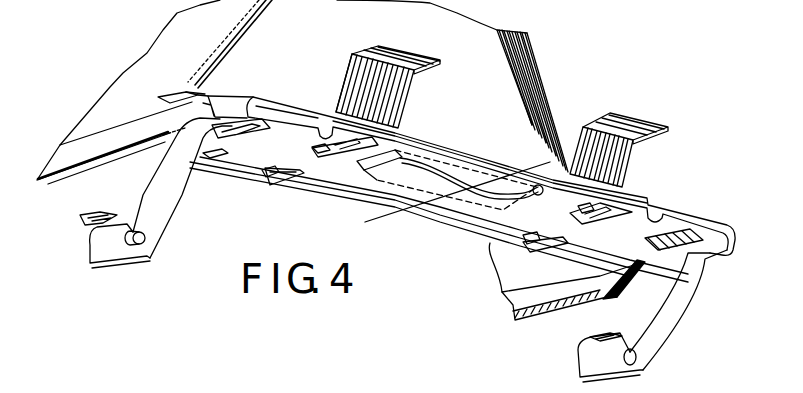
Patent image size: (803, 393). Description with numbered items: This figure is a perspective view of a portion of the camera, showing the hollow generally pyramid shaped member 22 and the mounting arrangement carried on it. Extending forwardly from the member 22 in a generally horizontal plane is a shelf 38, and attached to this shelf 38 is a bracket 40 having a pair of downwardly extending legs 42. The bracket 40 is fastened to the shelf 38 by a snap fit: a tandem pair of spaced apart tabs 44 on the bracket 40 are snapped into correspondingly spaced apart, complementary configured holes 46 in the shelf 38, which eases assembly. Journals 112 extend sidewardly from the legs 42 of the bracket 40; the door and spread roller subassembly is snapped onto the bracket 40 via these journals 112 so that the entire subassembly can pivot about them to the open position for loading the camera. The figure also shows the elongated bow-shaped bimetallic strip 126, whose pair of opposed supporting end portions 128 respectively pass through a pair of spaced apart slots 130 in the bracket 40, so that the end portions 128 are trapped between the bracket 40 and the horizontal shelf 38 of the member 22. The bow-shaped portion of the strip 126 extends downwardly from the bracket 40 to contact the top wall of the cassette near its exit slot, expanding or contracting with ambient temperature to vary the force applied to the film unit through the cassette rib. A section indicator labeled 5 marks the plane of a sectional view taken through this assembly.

The hollow generally pyramid shaped member 22 is at (541, 58).
The shelf 38 is at (268, 106).
The bracket 40 is at (415, 136).
The tabs 44 is at (350, 147).
The holes 46 is at (315, 147).
The supporting end portions 128 is at (327, 192).
The bimetallic strip 126 is at (452, 200).
The slots 130 is at (437, 163).
The section line 5- 5 is at (560, 161).
The legs 42 is at (190, 204).
The journals 112 is at (130, 240).